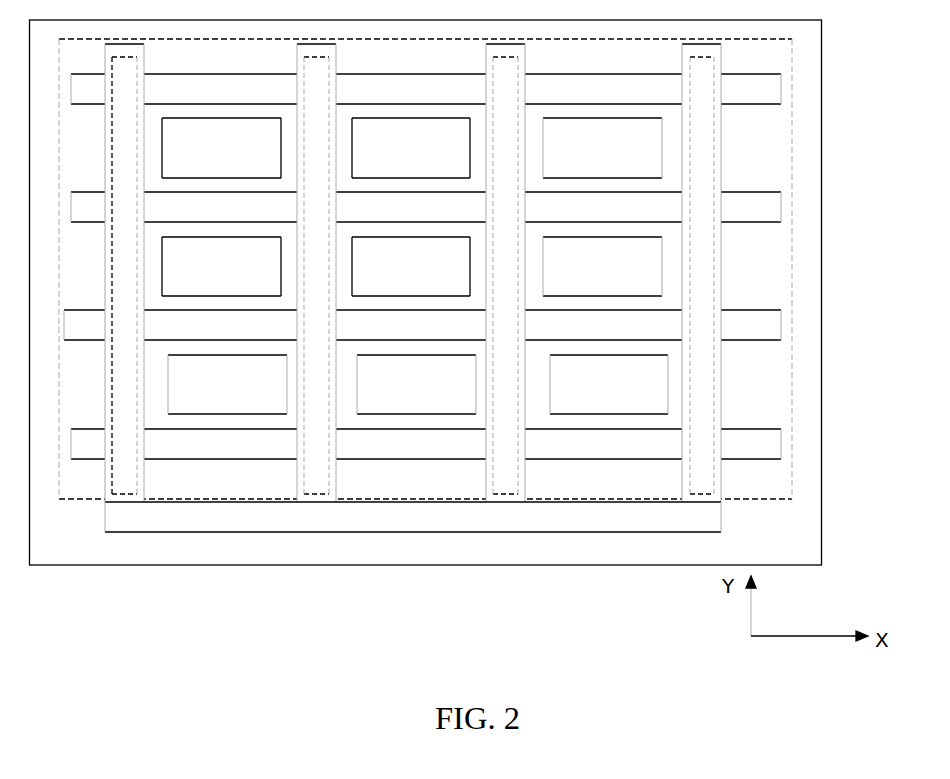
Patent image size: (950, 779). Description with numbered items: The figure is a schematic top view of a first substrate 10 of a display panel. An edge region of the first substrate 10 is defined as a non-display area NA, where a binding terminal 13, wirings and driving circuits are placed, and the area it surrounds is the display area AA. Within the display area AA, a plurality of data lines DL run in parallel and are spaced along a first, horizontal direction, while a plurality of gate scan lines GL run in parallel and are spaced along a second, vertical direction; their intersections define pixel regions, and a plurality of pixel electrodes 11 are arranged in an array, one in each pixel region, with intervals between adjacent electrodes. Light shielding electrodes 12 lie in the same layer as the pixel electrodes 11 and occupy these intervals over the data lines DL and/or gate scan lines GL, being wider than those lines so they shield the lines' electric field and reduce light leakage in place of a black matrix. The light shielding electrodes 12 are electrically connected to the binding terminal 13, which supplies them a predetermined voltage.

The first substrate 10 is at (804, 43).
The pixel electrode 11 is at (662, 268).
The light shielding electrode 12 is at (721, 368).
The binding terminal 13 is at (690, 517).
The data line DL is at (715, 158).
The gate scan line GL is at (763, 445).
The display area AA is at (72, 498).
The non-display area NA is at (166, 540).